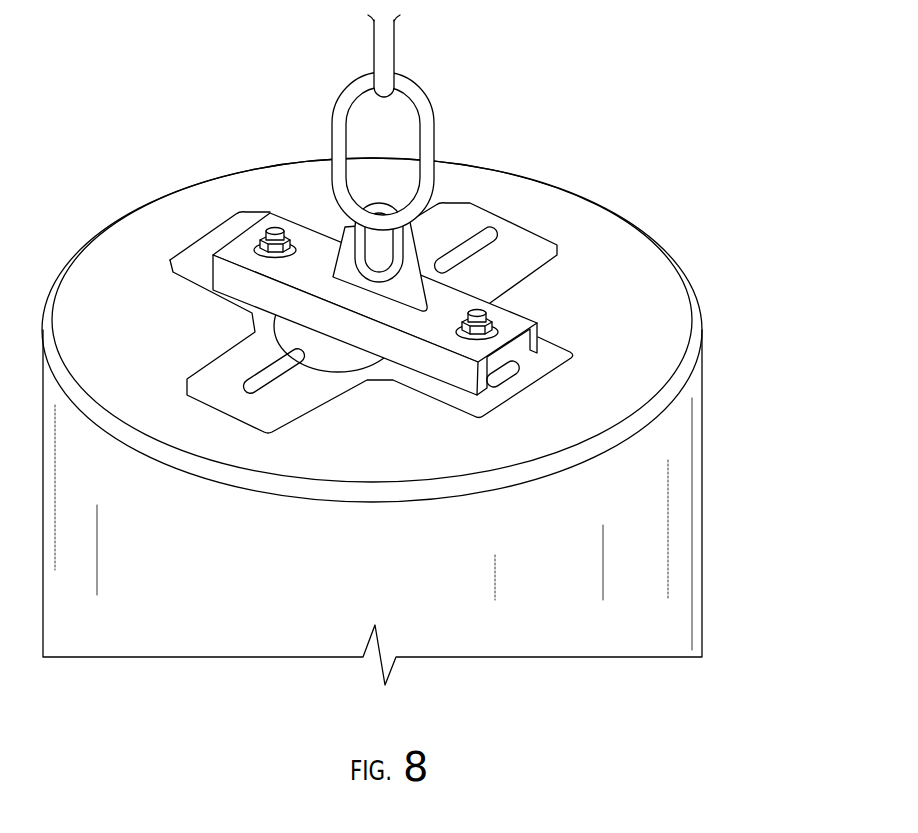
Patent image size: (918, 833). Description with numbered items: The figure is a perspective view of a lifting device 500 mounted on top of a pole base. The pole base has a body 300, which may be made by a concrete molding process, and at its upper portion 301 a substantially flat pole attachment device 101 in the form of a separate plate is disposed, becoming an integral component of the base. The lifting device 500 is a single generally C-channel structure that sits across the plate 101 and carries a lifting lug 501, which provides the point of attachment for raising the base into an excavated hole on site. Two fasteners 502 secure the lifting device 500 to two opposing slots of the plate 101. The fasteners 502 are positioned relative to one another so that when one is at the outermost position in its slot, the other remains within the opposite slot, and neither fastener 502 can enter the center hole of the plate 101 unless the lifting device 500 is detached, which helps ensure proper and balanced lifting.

The pole attachment device 101 is at (230, 233).
The body 300 is at (643, 630).
The upper portion 301 is at (680, 433).
The lifting device 500 is at (445, 313).
The lifting lug 501 is at (432, 276).
The fasteners 502 is at (488, 312).